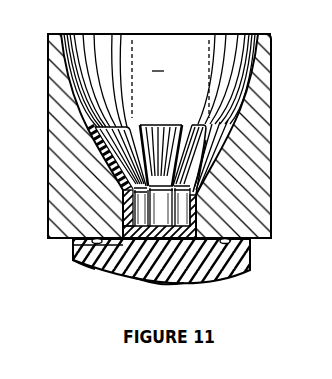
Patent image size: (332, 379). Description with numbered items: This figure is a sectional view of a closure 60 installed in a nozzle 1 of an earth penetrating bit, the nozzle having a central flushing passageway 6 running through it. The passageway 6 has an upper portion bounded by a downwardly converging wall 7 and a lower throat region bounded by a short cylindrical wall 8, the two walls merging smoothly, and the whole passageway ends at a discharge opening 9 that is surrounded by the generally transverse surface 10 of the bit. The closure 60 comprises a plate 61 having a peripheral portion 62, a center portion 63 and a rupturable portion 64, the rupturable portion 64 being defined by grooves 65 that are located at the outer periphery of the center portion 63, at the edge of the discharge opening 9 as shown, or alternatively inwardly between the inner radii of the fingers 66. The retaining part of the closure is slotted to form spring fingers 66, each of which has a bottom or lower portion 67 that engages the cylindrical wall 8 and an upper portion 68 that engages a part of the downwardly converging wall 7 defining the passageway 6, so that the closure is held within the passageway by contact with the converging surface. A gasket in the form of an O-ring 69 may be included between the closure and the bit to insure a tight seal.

The nozzle 1 is at (258, 65).
The flushing passageway 6 is at (170, 79).
The downwardly converging wall 7 is at (65, 71).
The short cylindrical wall 8 is at (123, 217).
The discharge opening 9 is at (163, 226).
The surface of the bit 10 is at (262, 241).
The closure 60 is at (66, 270).
The plate 61 is at (252, 263).
The peripheral portion 62 is at (78, 266).
The center portion 63 is at (146, 284).
The rupturable portion 64 is at (165, 285).
The grooves 65 is at (204, 229).
The fingers 66 is at (212, 160).
The lower portions 67 is at (197, 197).
The upper portions 68 is at (206, 126).
The O-ring 69 is at (93, 241).